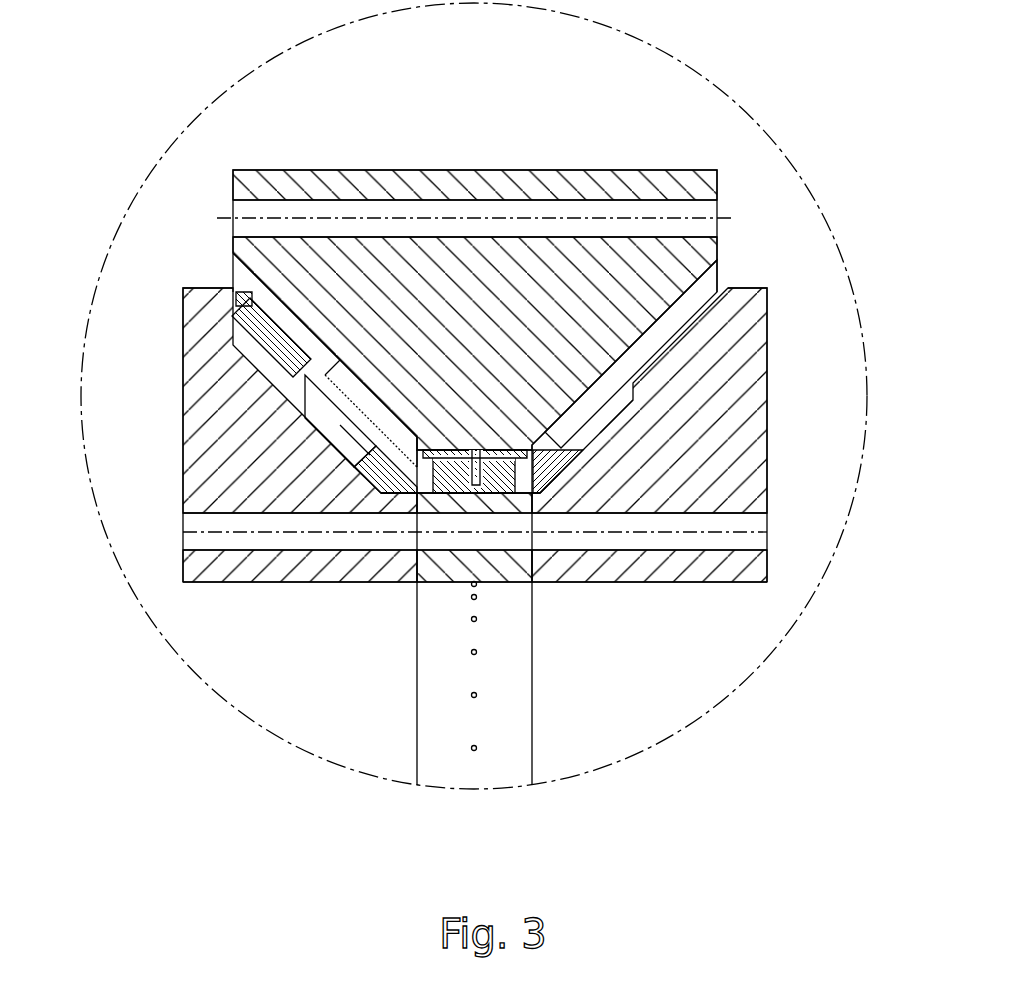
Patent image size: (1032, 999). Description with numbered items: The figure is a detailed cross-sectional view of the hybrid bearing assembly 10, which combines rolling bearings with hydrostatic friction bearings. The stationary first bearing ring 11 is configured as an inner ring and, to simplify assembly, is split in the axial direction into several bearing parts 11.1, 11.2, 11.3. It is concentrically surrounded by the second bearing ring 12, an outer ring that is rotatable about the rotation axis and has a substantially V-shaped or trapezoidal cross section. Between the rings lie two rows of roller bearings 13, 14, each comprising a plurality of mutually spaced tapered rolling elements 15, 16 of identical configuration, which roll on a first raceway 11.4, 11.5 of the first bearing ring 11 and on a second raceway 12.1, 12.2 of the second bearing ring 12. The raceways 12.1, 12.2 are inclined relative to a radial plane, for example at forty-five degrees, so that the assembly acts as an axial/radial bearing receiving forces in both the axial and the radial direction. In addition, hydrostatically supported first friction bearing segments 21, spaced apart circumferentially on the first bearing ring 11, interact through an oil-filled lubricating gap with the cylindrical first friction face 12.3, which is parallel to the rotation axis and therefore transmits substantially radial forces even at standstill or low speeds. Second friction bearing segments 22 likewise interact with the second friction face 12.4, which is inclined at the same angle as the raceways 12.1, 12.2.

The bearing assembly 10 is at (779, 105).
The first bearing ring 11 is at (745, 360).
The bearing part 11.1 is at (375, 582).
The bearing part 11.2 is at (450, 582).
The bearing part 11.3 is at (587, 582).
The first raceway 11.4 is at (577, 470).
The first raceway 11.5 is at (352, 445).
The second bearing ring 12 is at (687, 258).
The second raceway 12.1 is at (575, 437).
The second raceway 12.2 is at (378, 427).
The first friction face 12.3 is at (498, 467).
The second friction face 12.4 is at (266, 306).
The row of rolling elements 13 is at (590, 509).
The row of rolling elements 14 is at (368, 504).
The rolling element 15 is at (623, 437).
The rolling element 16 is at (355, 445).
The first friction bearing segment 21 is at (457, 478).
The second friction bearing segment 22 is at (247, 328).